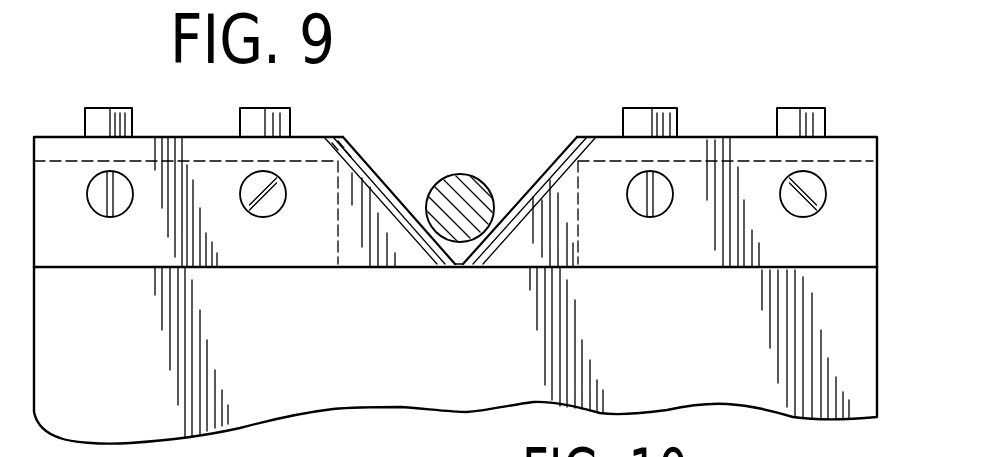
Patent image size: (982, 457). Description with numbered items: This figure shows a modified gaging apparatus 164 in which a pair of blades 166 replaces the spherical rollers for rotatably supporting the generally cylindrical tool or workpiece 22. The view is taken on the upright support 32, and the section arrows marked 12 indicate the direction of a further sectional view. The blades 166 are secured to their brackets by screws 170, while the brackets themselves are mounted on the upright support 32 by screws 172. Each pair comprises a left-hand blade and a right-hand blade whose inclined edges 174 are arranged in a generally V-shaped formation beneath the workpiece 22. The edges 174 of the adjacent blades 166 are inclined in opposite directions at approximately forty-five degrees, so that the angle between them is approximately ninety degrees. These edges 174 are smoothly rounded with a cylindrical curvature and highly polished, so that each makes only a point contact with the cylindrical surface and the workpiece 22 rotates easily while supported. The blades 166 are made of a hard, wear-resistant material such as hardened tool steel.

The modified gaging apparatus 164 is at (723, 81).
The second upright support 32 is at (380, 388).
The screws 172 is at (240, 108).
The screws 170 is at (133, 191).
The inclined edges 174 is at (375, 162).
The workpiece 22 is at (481, 176).
The section line 12 is at (430, 170).
The blades 166 is at (505, 253).